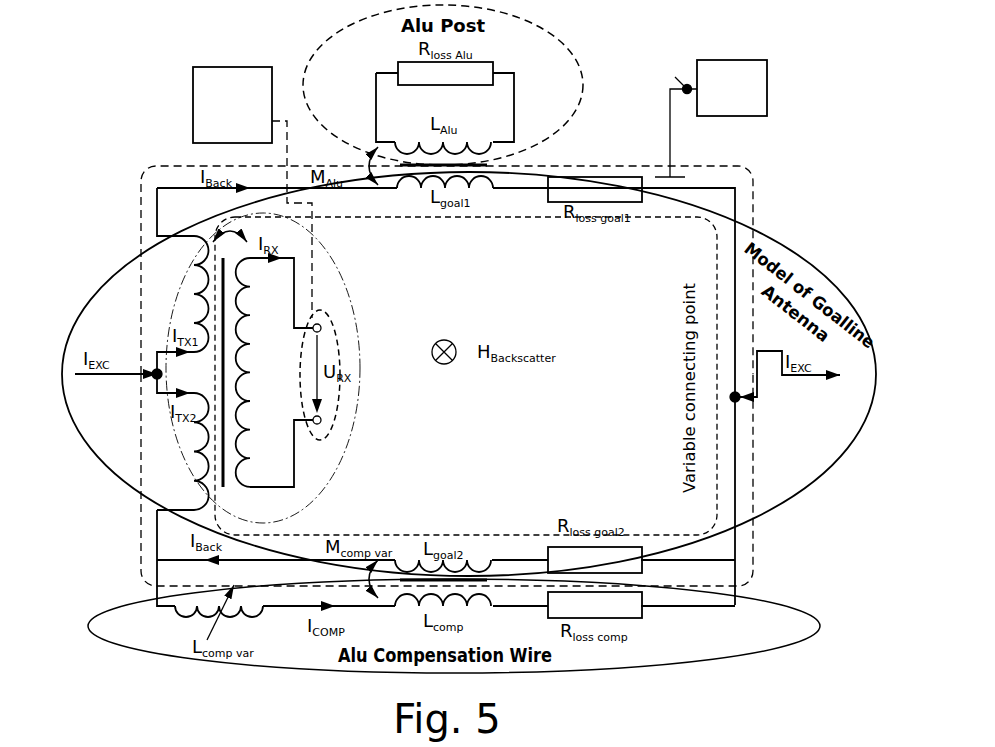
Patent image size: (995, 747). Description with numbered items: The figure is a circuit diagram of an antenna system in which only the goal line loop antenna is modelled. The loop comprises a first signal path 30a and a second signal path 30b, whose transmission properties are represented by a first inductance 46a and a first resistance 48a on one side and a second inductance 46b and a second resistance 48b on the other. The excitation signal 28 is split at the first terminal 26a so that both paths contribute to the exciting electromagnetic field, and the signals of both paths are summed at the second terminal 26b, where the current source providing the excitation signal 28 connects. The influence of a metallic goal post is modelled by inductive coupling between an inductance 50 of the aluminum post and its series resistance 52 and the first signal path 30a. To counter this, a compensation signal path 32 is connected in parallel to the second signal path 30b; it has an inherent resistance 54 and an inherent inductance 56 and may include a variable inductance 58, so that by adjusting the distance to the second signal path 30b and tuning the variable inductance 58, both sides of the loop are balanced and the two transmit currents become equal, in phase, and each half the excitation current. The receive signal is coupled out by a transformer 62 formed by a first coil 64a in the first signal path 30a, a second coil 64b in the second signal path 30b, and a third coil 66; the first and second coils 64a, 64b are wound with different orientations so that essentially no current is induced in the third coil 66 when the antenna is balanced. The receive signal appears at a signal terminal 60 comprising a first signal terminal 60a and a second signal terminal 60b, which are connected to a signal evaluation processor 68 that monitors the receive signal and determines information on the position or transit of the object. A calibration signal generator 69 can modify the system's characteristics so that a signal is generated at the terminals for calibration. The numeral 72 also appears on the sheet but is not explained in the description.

The excitation signal 28 is at (72, 345).
The first terminal 26a is at (150, 378).
The second terminal 26b is at (742, 400).
The first signal path 30a is at (755, 185).
The second signal path 30b is at (756, 548).
The compensation signal path 32 is at (812, 652).
The first inductance 46a is at (468, 196).
The second inductance 46b is at (470, 557).
The first resistance 48a is at (637, 202).
The second resistance 48b is at (550, 546).
The inductance of the aluminum post 50 is at (470, 145).
The resistance 52 is at (485, 68).
The inherent resistance 54 is at (628, 610).
The inherent inductance 56 is at (468, 605).
The variable inductance 58 is at (267, 614).
The signal terminal 60 is at (340, 295).
The first signal terminal 60a is at (338, 415).
The second signal terminal 60b is at (330, 322).
The transformer 62 is at (350, 468).
The first coil 64a is at (196, 262).
The second coil 64b is at (196, 458).
The third coil 66 is at (248, 352).
The signal evaluation processor 68 is at (232, 105).
The calibration signal generator 69 is at (732, 88).
The reference numeral 72 is at (357, 739).